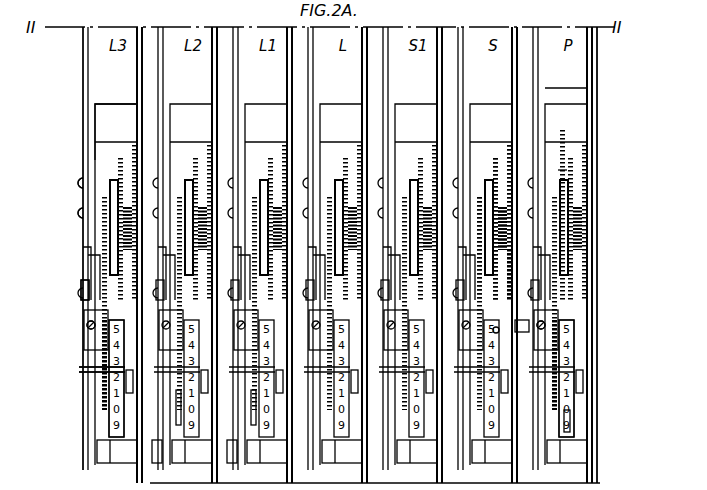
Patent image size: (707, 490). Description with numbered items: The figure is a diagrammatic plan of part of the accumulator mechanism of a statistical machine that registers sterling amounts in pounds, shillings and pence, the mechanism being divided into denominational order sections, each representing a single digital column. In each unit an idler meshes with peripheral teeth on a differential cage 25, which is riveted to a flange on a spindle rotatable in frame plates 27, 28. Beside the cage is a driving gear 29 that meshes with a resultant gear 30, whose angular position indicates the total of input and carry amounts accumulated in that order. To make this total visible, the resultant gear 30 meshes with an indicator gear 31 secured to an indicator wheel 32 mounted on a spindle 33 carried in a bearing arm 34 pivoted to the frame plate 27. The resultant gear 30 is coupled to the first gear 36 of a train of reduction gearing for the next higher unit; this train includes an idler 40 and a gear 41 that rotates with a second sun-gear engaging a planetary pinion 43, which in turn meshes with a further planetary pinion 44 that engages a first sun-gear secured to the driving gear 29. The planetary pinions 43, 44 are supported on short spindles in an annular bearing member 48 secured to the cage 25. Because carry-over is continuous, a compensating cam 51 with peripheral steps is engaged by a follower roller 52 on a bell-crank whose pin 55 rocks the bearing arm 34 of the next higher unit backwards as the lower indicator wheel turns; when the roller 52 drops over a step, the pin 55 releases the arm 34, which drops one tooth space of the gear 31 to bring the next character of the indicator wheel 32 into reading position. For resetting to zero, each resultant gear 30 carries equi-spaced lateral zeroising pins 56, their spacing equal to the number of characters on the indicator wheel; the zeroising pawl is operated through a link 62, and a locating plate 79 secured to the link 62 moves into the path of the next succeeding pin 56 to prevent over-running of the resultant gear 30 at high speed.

The link 62 is at (86, 42).
The frame plate 27 is at (145, 47).
The frame plate 28 is at (97, 120).
The locating plate 79 is at (84, 245).
The zeroising pin 56 is at (92, 274).
The resultant gear 30 is at (100, 318).
The bearing arm 34 is at (148, 382).
The indicator gear 31 is at (100, 394).
The indicator wheel 32 is at (113, 428).
The pin 55 is at (155, 451).
The compensating cam 51 is at (178, 400).
The follower roller 52 is at (230, 451).
The annular bearing member 48 is at (478, 200).
The differential cage 25 is at (494, 180).
The planetary pinion 43 is at (512, 190).
The driving gear 29 is at (565, 176).
The planetary pinion 44 is at (512, 232).
The gear 41 is at (515, 272).
The idler 40 is at (522, 326).
The first gear 36 is at (497, 332).
The spindle 33 is at (388, 486).